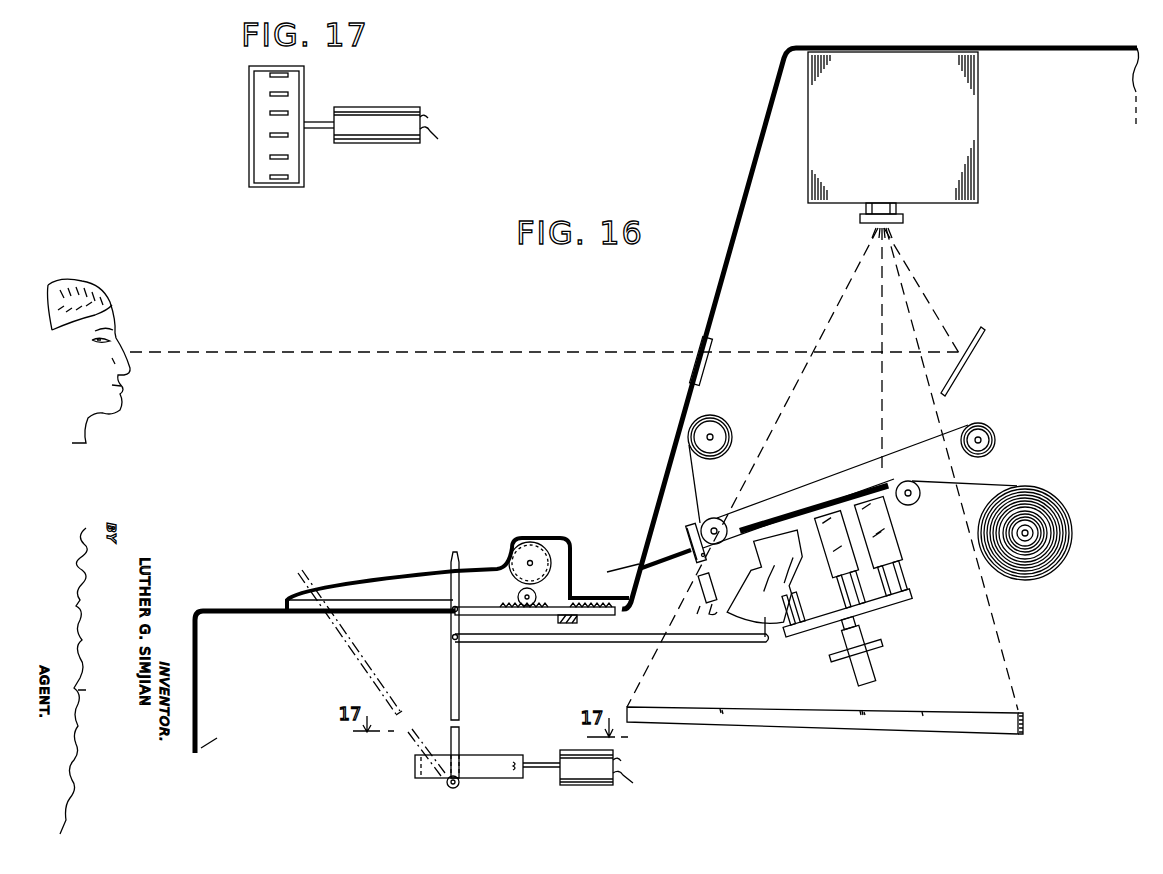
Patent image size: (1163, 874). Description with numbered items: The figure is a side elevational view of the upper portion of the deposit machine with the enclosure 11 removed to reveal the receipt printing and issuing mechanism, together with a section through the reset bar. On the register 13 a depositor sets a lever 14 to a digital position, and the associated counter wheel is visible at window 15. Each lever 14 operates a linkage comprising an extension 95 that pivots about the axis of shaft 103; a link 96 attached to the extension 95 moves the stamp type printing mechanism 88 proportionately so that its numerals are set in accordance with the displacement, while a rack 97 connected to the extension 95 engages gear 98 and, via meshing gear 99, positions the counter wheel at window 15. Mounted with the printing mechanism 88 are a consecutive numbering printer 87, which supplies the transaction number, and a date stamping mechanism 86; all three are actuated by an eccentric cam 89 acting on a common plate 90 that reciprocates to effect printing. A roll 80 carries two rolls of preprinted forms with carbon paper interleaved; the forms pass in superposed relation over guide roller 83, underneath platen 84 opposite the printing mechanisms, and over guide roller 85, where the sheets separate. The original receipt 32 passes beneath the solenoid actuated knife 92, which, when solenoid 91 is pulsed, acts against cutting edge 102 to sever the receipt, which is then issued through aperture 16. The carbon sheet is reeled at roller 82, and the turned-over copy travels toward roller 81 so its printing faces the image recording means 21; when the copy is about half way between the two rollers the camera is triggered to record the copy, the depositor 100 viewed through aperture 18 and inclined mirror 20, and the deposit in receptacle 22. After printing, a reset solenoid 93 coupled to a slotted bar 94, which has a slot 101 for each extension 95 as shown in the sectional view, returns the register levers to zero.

In FIG. 16, the enclosure 11 is at (770, 102).
In FIG. 16, the register 13 is at (555, 540).
In FIG. 16, the lever 14 is at (454, 551).
In FIG. 16, the window 15 is at (515, 550).
In FIG. 16, the aperture 16 is at (638, 562).
In FIG. 16, the aperture 18 is at (712, 346).
In FIG. 16, the inclined mirror 20 is at (986, 337).
In FIG. 16, the image recording means 21 is at (905, 104).
In FIG. 16, the receptacle 22 is at (1032, 712).
In FIG. 16, the original receipt 32 is at (615, 570).
In FIG. 16, the roll 80 is at (1063, 518).
In FIG. 16, the roller 81 is at (996, 440).
In FIG. 16, the roller 82 is at (720, 419).
In FIG. 16, the guide roller 83 is at (912, 505).
In FIG. 16, the platen 84 is at (797, 512).
In FIG. 16, the guide roller 85 is at (723, 518).
In FIG. 16, the date stamping mechanism 86 is at (897, 553).
In FIG. 16, the consecutive numbering printer 87 is at (847, 570).
In FIG. 16, the printing mechanism 88 is at (797, 581).
In FIG. 16, the eccentric cam 89 is at (873, 665).
In FIG. 16, the common plate 90 is at (870, 617).
In FIG. 16, the solenoid 91 is at (697, 581).
In FIG. 16, the solenoid actuated knife 92 is at (692, 527).
In FIG. 17, the reset solenoid 93 is at (386, 123).
In FIG. 16, the reset solenoid 93 is at (580, 760).
In FIG. 17, the slotted bar 94 is at (283, 187).
In FIG. 16, the slotted bar 94 is at (493, 760).
In FIG. 16, the extension 95 is at (460, 685).
In FIG. 16, the link 96 is at (533, 642).
In FIG. 16, the rack 97 is at (526, 614).
In FIG. 16, the gear 98 is at (515, 596).
In FIG. 16, the meshing gear 99 is at (522, 571).
In FIG. 16, the depositor 100 is at (108, 416).
In FIG. 17, the slot 101 is at (268, 135).
In FIG. 16, the cutting edge 102 is at (707, 555).
In FIG. 16, the shaft 103 is at (446, 785).